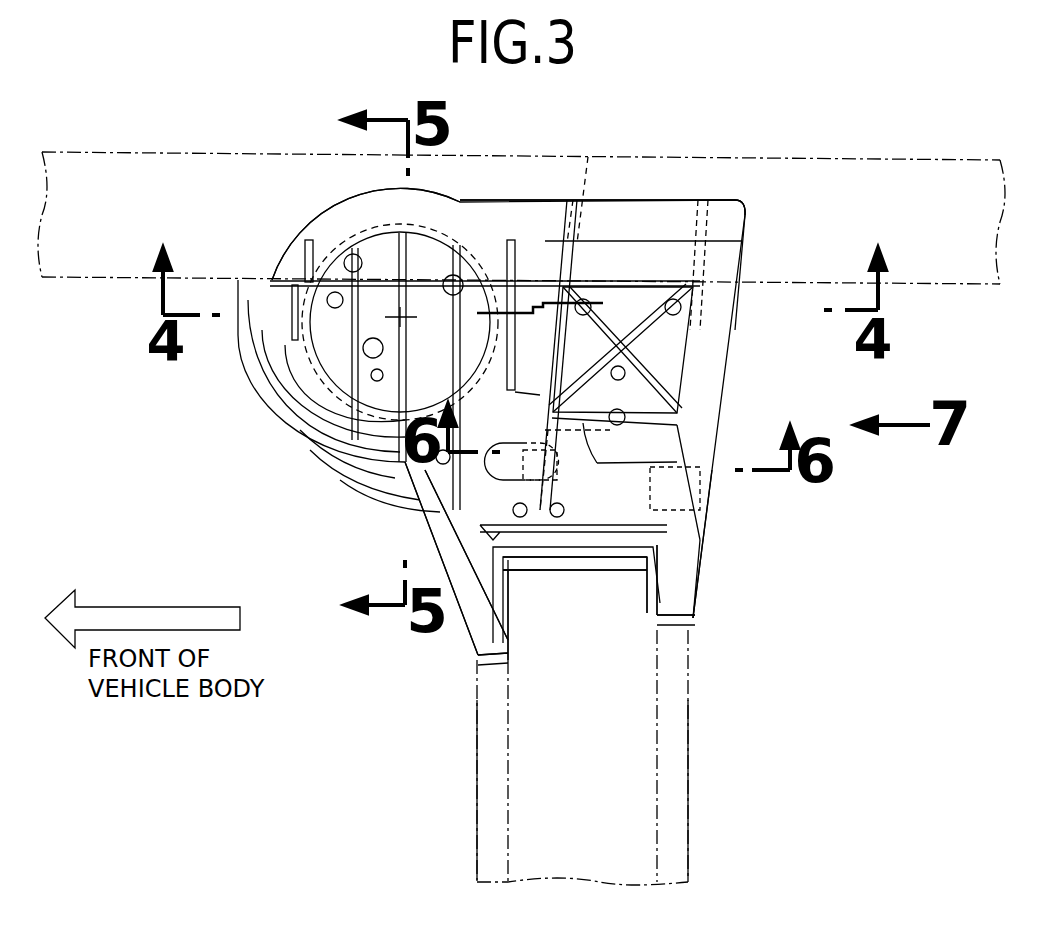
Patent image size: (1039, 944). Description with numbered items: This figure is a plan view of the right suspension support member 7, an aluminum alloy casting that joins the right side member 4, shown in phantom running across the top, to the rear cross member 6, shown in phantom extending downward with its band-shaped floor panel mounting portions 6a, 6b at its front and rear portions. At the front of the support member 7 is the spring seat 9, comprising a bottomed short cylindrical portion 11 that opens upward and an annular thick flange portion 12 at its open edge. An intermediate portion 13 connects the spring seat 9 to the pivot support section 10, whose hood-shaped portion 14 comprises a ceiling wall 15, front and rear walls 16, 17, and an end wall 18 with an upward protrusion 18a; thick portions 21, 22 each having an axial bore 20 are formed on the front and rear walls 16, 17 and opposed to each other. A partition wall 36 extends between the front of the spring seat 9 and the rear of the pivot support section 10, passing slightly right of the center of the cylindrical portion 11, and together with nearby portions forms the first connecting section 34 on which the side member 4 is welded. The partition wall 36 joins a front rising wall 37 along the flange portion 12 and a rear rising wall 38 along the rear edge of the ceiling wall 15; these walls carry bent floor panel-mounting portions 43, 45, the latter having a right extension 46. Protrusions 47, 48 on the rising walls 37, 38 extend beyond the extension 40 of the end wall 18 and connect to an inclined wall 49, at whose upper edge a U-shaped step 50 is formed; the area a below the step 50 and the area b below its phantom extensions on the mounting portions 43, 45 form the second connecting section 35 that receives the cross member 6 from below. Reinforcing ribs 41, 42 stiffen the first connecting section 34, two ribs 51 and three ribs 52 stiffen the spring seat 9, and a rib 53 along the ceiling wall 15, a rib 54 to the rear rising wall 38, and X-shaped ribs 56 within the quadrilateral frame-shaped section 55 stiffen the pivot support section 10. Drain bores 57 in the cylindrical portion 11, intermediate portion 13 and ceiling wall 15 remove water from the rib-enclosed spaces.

The right side member 4 is at (825, 160).
The rear cross member 6 is at (690, 722).
The floor panel mounting portion 6a is at (477, 805).
The floor panel mounting portion 6b is at (690, 805).
The right suspension support member 7 is at (295, 245).
The spring seat 9 is at (400, 203).
The pivot support section 10 is at (660, 497).
The bottomed short cylindrical portion 11 is at (315, 388).
The annular thick flange portion 12 is at (290, 428).
The intermediate portion 13 is at (505, 212).
The hood-shaped portion 14 is at (680, 437).
The ceiling wall 15 is at (600, 520).
The front wall 16 is at (589, 179).
The rear wall 17 is at (728, 220).
The end wall 18 is at (570, 537).
The upward protrusion 18a is at (667, 438).
The axial bore 20 is at (535, 450).
The thick portion 21 is at (518, 503).
The thick portion 22 is at (663, 557).
The first connecting section 34 is at (612, 222).
The second connecting section 35 is at (612, 570).
The partition wall 36 is at (627, 283).
The front rising wall 37 is at (283, 358).
The rear rising wall 38 is at (700, 336).
The extension of the end wall 40 is at (443, 537).
The reinforcing rib 41 is at (305, 260).
The reinforcing rib 42 is at (397, 245).
The floor panel-mounting portion 43 is at (343, 460).
The floor panel-mounting portion 45 is at (693, 460).
The right extension 46 is at (720, 258).
The protrusion 47 is at (493, 560).
The protrusion 48 is at (660, 560).
The inclined wall 49 is at (503, 612).
The U-shaped step 50 is at (603, 560).
The reinforcing rib 51 is at (293, 320).
The reinforcing rib 52 is at (360, 476).
The reinforcing rib 53 is at (513, 390).
The reinforcing rib 54 is at (593, 445).
The quadrilateral frame-shaped section 55 is at (668, 283).
The X-shaped reinforcing ribs 56 is at (665, 400).
The drain bore 57 is at (333, 294).
The area a is at (540, 570).
The area b is at (487, 660).